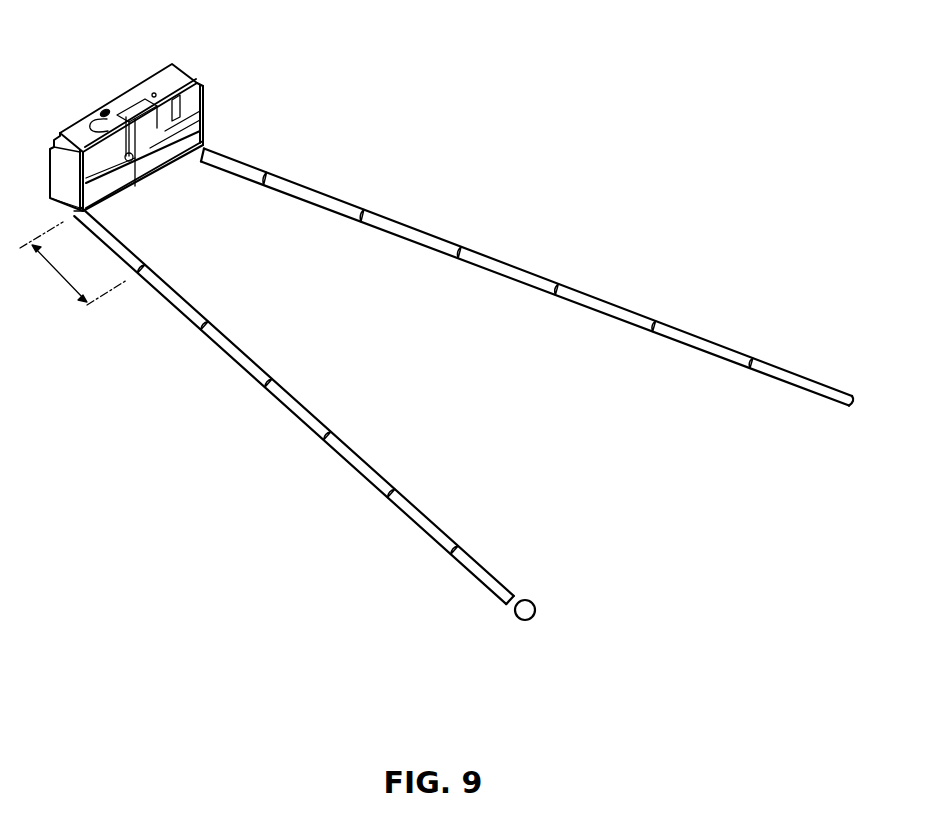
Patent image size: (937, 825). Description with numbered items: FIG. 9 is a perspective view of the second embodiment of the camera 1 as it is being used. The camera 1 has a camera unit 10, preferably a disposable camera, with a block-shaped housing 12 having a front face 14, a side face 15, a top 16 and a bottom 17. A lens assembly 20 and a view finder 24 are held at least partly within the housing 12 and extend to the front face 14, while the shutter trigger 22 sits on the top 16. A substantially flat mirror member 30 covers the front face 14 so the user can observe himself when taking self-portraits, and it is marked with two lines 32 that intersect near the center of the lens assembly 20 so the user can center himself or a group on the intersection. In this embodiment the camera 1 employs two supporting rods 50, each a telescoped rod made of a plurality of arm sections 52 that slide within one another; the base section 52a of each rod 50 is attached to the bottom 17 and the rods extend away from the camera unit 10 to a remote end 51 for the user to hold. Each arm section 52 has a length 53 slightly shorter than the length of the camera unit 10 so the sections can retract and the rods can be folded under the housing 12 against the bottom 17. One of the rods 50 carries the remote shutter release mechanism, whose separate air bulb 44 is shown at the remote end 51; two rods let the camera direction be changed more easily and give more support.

The camera 1 is at (625, 147).
The camera unit 10 is at (138, 137).
The housing 12 is at (206, 130).
The front face 14 is at (173, 153).
The side face 15 is at (62, 185).
The top 16 is at (163, 80).
The bottom 17 is at (168, 153).
The lens assembly 20 is at (125, 157).
The shutter trigger 22 is at (86, 119).
The view finder 24 is at (157, 122).
The mirror member 30 is at (74, 214).
The lines 32 is at (97, 178).
The air bulb 44 is at (536, 606).
The supporting arm 50 is at (298, 403).
The remote end 51 is at (507, 603).
The arm sections 52 is at (190, 308).
The base section 52a is at (246, 170).
The length 53 is at (58, 278).